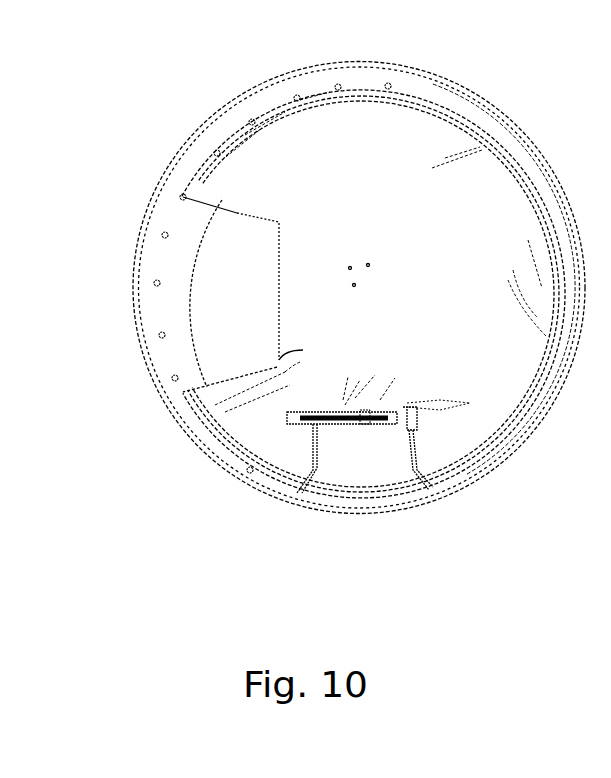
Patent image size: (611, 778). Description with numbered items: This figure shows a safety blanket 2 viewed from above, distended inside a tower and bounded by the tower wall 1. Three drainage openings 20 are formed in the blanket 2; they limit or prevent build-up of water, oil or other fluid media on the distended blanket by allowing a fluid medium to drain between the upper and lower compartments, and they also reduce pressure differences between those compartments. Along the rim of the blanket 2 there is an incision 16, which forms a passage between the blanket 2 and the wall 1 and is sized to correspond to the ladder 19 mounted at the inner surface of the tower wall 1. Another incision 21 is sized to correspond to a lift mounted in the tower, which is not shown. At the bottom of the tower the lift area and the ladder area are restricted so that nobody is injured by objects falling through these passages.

The tower wall 1 is at (253, 90).
The safety blanket 2 is at (487, 177).
The incision 21 is at (237, 216).
The drainage openings 20 is at (350, 268).
The ladder 19 is at (332, 413).
The incision 16 is at (420, 480).